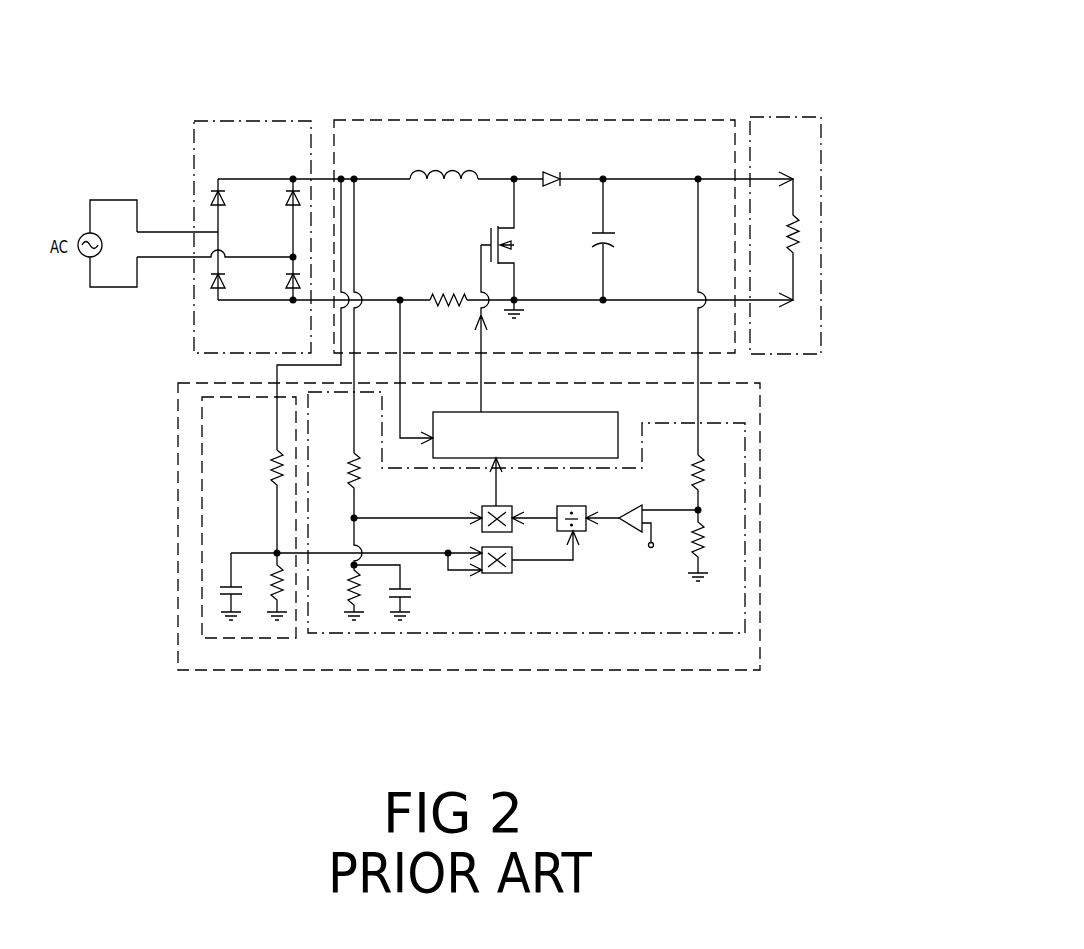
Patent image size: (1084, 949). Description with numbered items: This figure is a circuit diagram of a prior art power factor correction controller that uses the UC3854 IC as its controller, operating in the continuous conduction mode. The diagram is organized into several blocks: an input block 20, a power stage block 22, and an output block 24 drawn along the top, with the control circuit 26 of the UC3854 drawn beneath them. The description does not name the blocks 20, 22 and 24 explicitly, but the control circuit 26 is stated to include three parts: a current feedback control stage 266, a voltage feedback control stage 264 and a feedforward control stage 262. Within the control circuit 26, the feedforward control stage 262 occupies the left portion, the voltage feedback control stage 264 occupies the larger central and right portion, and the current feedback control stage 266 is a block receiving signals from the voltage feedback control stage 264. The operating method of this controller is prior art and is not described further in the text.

The bridge rectifier 20 is at (194, 130).
The boost power factor correction stage 22 is at (415, 118).
The load 24 is at (766, 115).
The control circuit 26 is at (760, 427).
The feedforward control stage 262 is at (199, 478).
The voltage feedback control stage 264 is at (740, 633).
The current feedback control stage 266 is at (619, 440).